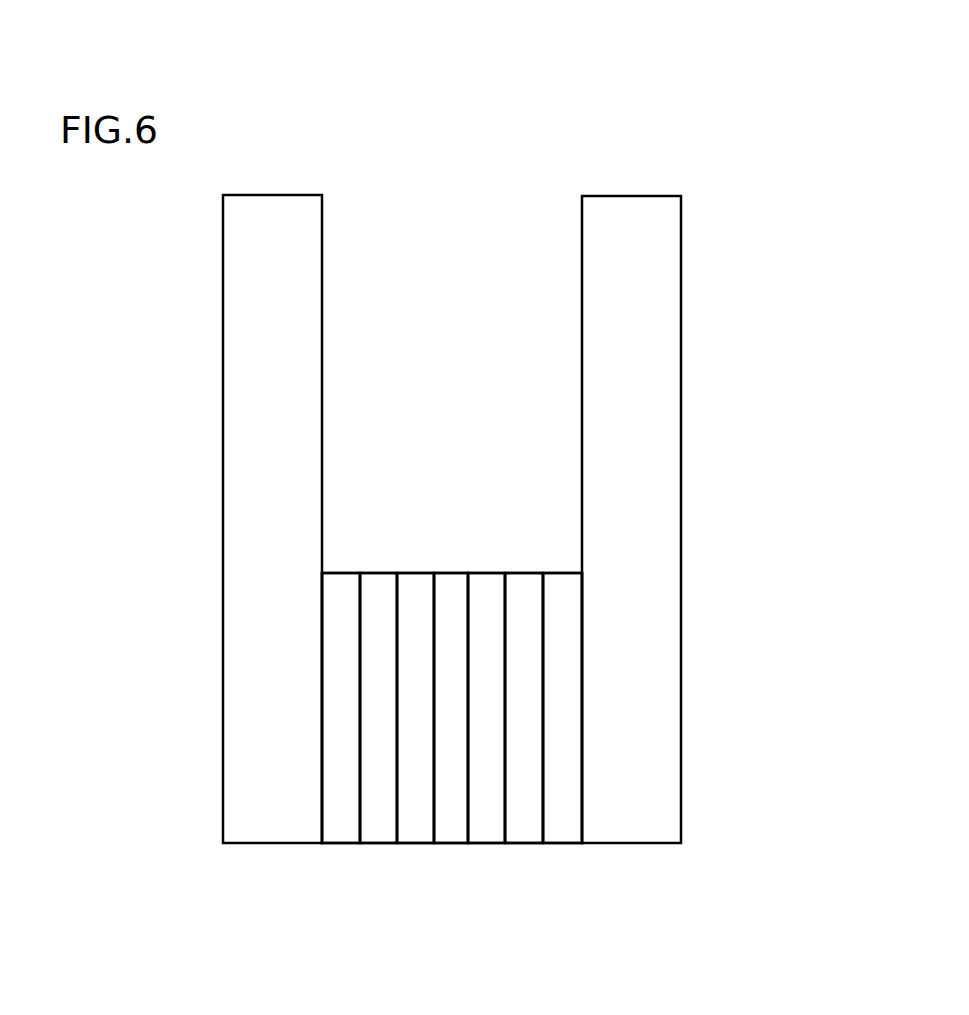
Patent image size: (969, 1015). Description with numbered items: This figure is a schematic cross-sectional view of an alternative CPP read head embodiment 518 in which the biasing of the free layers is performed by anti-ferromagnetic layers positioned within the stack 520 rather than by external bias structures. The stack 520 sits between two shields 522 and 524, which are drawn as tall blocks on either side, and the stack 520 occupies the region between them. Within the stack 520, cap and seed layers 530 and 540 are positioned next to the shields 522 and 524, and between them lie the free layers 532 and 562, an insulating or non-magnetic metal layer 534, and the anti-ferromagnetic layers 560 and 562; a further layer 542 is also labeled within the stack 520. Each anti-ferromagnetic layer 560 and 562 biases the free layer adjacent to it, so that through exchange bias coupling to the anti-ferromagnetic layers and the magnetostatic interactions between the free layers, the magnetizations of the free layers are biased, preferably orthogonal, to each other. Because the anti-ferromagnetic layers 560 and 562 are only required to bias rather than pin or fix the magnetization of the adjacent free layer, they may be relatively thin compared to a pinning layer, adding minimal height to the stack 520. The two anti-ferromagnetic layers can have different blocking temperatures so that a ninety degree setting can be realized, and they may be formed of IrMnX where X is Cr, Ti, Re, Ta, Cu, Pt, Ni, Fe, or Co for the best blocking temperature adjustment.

The read head embodiment 518 is at (717, 157).
The stack 520 is at (413, 572).
The shield 522 is at (660, 481).
The shield 524 is at (235, 443).
The cap and seed layer 530 is at (565, 583).
The free layer 532 is at (489, 833).
The insulating or non-magnetic metal layer 534 is at (453, 580).
The cap and seed layer 540 is at (343, 583).
The layer 542 is at (415, 833).
The anti-ferromagnetic layer 560 is at (524, 833).
The anti-ferromagnetic layer 562 is at (383, 833).